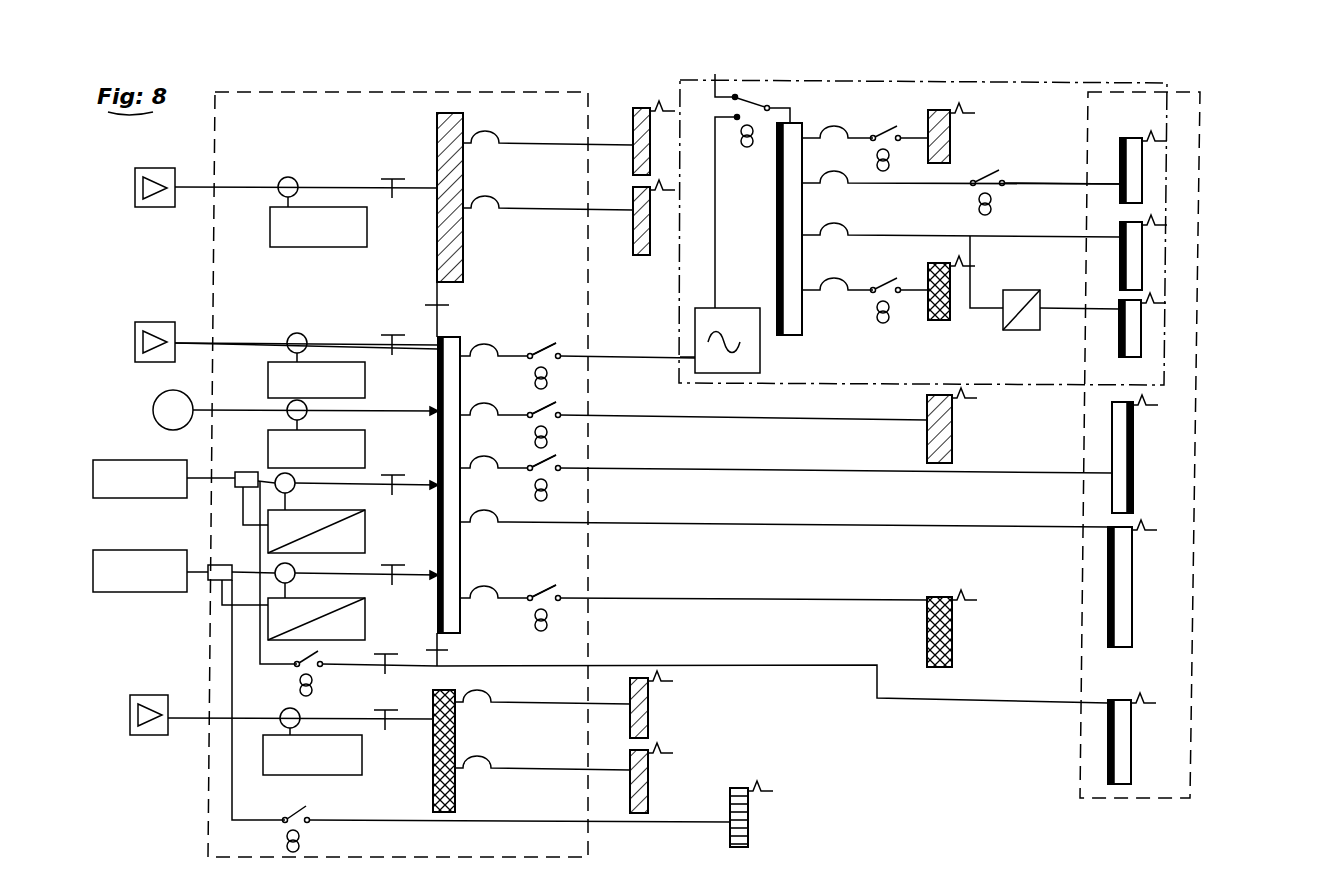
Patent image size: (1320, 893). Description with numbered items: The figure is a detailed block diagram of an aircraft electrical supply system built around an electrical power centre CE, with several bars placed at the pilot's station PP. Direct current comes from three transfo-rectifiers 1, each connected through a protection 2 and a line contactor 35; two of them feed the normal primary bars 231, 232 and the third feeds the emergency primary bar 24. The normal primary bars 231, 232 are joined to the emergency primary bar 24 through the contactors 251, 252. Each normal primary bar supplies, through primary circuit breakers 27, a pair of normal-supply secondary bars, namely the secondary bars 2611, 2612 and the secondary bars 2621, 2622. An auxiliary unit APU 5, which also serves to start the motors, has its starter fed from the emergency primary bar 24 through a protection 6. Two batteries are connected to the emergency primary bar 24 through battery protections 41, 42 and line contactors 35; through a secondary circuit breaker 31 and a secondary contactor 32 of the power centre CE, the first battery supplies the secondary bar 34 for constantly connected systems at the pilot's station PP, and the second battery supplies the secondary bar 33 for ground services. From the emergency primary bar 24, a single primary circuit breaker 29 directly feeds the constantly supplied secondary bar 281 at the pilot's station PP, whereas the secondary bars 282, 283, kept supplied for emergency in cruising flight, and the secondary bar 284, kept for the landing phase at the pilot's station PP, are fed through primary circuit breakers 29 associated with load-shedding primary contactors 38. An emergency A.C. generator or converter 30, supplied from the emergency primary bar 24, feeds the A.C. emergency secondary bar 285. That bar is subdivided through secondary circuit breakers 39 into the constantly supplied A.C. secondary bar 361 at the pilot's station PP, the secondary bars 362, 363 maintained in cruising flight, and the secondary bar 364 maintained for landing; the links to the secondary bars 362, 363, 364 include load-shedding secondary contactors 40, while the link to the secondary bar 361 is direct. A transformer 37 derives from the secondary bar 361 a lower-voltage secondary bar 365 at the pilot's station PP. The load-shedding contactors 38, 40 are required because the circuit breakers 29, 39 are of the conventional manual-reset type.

The transfo-rectifier 1 is at (150, 168).
The protection 2 is at (340, 248).
The auxiliary unit APU 5 is at (153, 412).
The protection 6 is at (365, 453).
The secondary circuit breaker 31 is at (112, 460).
The secondary contactor 32 is at (118, 550).
The battery protection 41 is at (365, 542).
The battery protection 42 is at (360, 632).
The normal primary bar 231 is at (465, 262).
The normal primary bar 232 is at (455, 798).
The emergency primary bar 24 is at (460, 562).
The contactor 251 is at (449, 306).
The contactor 252 is at (448, 652).
The secondary bar of normal supply 2611 is at (632, 113).
The secondary bar of normal supply 2612 is at (650, 240).
The secondary bar of normal supply 2621 is at (649, 724).
The secondary bar of normal supply 2622 is at (649, 799).
The primary circuit breaker 27 is at (492, 137).
The primary circuit breaker 29 is at (495, 347).
The secondary bar 281 is at (1133, 633).
The secondary bar 282 is at (952, 448).
The secondary bar 283 is at (950, 657).
The secondary bar 284 is at (1133, 500).
The emergency secondary bar in A.C. mode 285 is at (790, 335).
The emergency A.C. generator (converter) 30 is at (745, 373).
The secondary bar 33 is at (750, 833).
The secondary bar 34 is at (1128, 770).
The line contactor 35 is at (395, 177).
The emergency secondary bar in A.C. mode 361 is at (1135, 278).
The secondary bar 362 is at (955, 147).
The secondary bar 363 is at (938, 322).
The secondary bar 364 is at (1135, 180).
The secondary bar 365 is at (1140, 352).
The transformer 37 is at (1027, 331).
The load-shedding primary contactor 38 is at (560, 408).
The secondary circuit breaker 39 is at (835, 133).
The load-shedding secondary contactor 40 is at (998, 192).
The electrical power centre CE is at (589, 329).
The pilot's station PP is at (1189, 701).